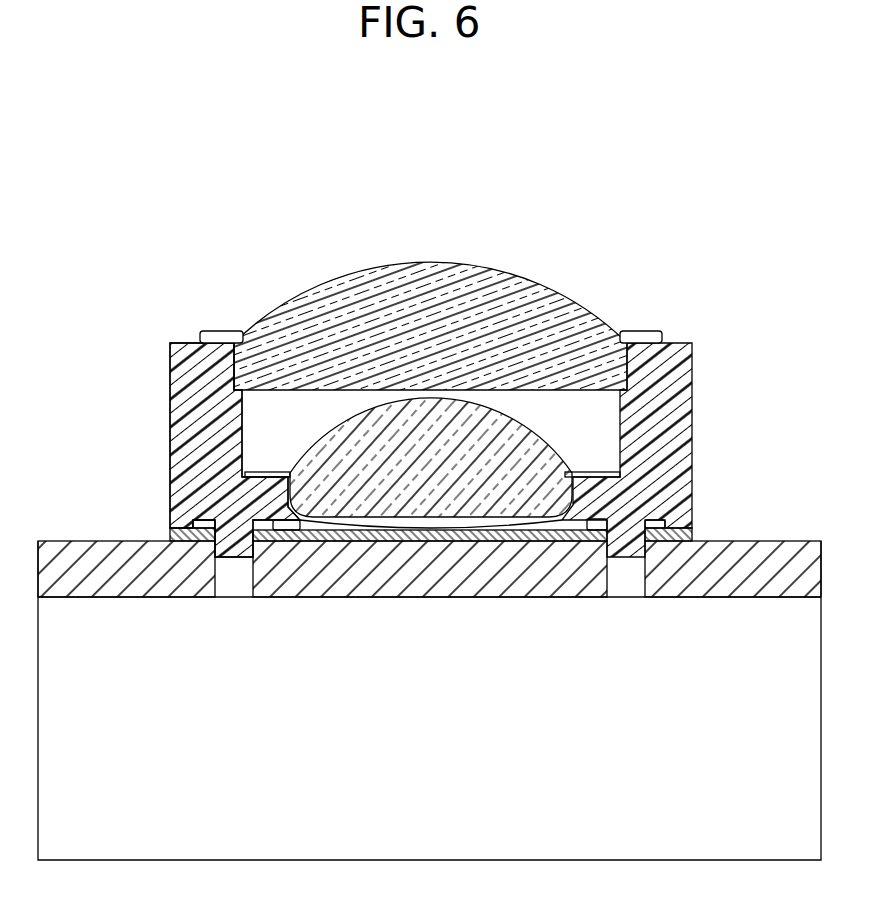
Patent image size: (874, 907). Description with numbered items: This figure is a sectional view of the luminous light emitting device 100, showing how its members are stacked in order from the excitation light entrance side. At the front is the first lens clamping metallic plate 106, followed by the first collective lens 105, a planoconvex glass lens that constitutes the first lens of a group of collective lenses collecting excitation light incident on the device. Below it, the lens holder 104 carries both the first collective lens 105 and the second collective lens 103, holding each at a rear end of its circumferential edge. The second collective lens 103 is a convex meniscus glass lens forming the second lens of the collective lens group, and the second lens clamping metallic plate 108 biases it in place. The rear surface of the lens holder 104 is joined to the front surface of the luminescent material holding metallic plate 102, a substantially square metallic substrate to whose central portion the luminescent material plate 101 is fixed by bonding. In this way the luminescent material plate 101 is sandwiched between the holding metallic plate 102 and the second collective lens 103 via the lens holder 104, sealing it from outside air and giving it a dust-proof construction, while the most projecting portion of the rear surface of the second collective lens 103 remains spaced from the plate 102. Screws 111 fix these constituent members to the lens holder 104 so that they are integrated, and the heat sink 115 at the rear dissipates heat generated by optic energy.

The luminous light emitting device 100 is at (440, 328).
The luminescent material plate 101 is at (418, 525).
The luminescent material holding metallic plate 102 is at (690, 523).
The second collective lens 103 is at (483, 452).
The lens holder 104 is at (680, 427).
The first collective lens 105 is at (465, 315).
The first lens clamping metallic plate 106 is at (180, 343).
The second lens clamping metallic plate 108 is at (195, 437).
The screws 111 is at (429, 297).
The heat sink 115 is at (117, 557).